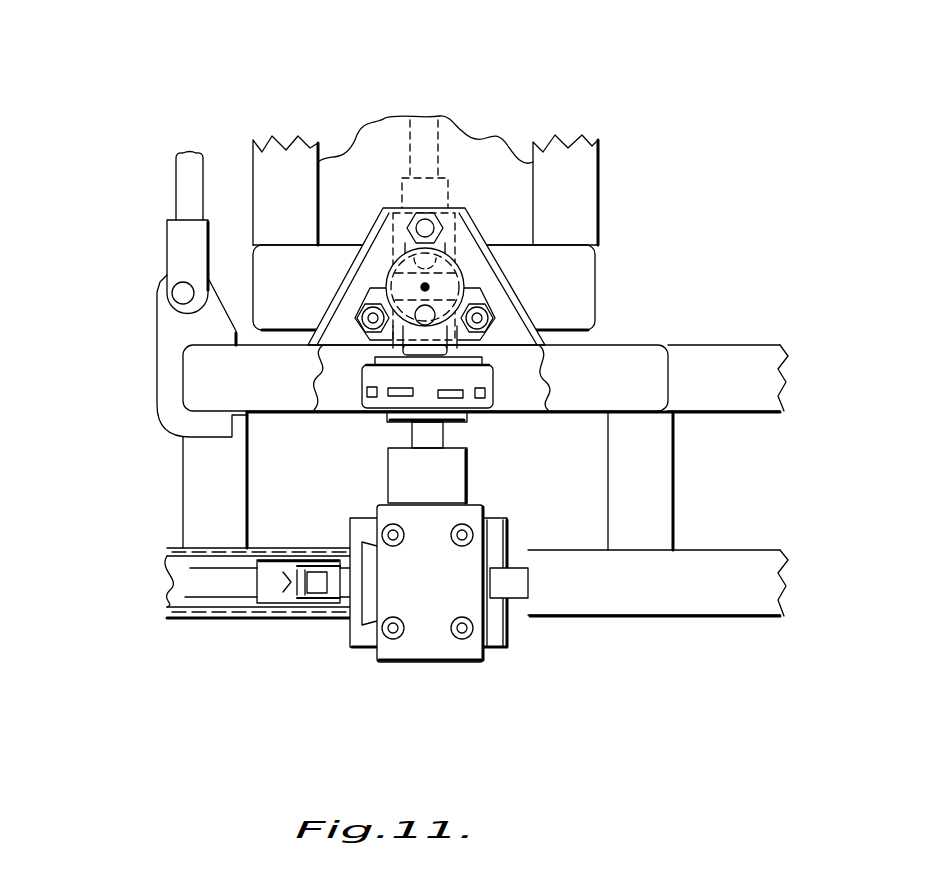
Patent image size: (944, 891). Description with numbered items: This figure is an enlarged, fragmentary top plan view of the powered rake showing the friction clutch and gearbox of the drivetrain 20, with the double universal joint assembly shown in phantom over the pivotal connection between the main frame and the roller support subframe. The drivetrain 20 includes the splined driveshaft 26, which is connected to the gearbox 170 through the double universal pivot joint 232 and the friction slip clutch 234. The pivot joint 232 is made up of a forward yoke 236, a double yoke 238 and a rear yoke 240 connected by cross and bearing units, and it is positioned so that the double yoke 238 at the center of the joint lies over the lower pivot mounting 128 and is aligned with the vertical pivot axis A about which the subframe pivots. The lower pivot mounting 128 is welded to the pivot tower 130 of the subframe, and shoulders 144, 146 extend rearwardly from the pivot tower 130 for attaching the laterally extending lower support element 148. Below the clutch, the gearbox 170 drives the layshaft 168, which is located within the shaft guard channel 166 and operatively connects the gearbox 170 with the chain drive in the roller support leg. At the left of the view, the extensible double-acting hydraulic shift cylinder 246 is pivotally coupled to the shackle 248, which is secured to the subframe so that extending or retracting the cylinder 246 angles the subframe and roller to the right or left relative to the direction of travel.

The drivetrain 20 is at (398, 153).
The driveshaft 26 is at (440, 146).
The forward yoke 236 is at (455, 198).
The double universal pivot joint 232 is at (461, 232).
The double yoke 238 is at (380, 266).
The lower pivot mounting 128 is at (508, 283).
The vertical pivot axis A is at (427, 288).
The pivot tower 130 is at (620, 360).
The hydraulic shift cylinder 246 is at (180, 181).
The shackle 248 is at (167, 390).
The rear yoke 240 is at (368, 356).
The friction slip clutch 234 is at (470, 417).
The shoulder 146 is at (222, 510).
The shoulder 144 is at (650, 508).
The layshaft 168 is at (198, 590).
The shaft guard channel 166 is at (288, 620).
The gearbox 170 is at (425, 650).
The lower support element 148 is at (630, 603).